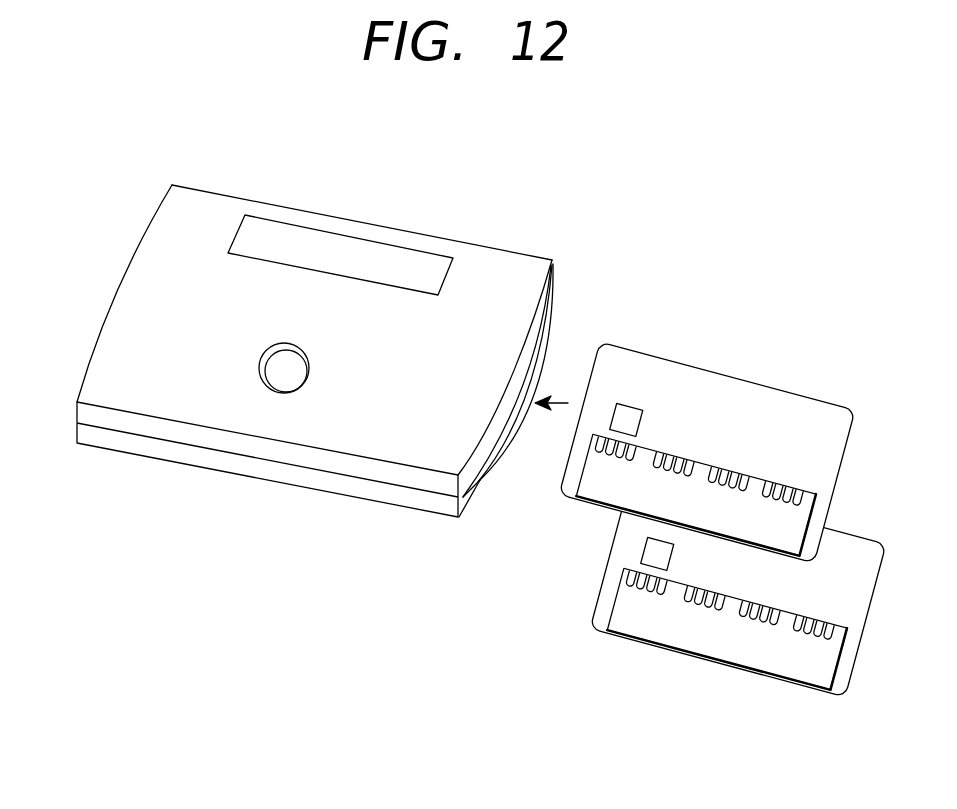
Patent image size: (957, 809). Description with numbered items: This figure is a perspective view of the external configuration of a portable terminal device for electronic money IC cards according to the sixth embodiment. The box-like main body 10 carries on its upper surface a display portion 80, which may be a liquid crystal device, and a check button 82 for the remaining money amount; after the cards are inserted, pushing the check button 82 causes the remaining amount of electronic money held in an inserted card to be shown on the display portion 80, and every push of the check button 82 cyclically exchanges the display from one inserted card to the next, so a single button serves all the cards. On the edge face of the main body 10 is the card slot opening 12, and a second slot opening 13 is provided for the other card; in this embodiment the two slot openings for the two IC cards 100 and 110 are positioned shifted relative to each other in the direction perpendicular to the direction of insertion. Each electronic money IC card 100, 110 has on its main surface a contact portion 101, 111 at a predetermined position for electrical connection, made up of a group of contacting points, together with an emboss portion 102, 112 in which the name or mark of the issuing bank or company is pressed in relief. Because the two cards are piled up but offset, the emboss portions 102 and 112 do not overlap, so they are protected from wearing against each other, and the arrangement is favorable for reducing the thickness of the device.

The main body 10 is at (168, 442).
The card slot opening 12 is at (553, 315).
The second slot opening 13 is at (482, 480).
The display portion 80 is at (352, 247).
The check button 82 is at (278, 373).
The electronic money IC card 100 is at (807, 410).
The contact portion 101 is at (631, 412).
The emboss portion 102 is at (703, 467).
The electronic money IC card 110 is at (858, 592).
The contact portion 111 is at (651, 562).
The emboss portion 112 is at (733, 595).